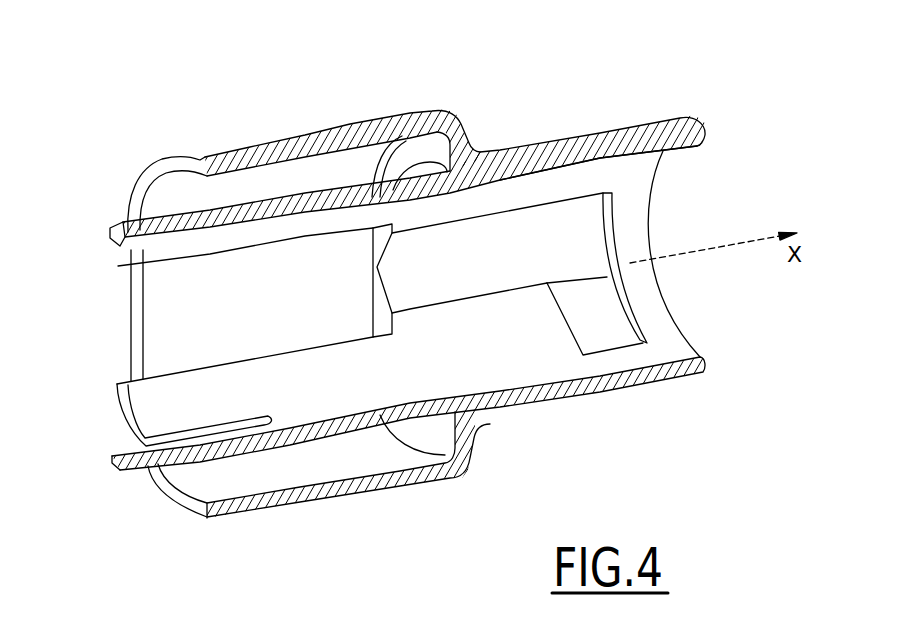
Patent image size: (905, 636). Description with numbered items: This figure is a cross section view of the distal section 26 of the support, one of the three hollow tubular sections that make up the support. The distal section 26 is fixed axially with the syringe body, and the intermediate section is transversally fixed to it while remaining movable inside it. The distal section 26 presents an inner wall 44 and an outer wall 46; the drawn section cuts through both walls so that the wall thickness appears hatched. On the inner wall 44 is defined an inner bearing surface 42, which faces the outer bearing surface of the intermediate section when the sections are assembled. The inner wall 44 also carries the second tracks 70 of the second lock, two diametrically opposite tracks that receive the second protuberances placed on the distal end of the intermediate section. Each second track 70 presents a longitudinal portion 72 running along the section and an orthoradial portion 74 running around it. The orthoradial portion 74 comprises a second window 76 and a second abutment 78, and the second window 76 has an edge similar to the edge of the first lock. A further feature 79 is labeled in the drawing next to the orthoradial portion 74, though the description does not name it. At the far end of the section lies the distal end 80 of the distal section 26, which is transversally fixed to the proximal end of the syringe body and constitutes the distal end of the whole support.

The distal section 26 is at (322, 97).
The outer wall 46 is at (610, 122).
The inner bearing surface 42 is at (630, 168).
The second abutment 78 is at (581, 212).
The window opening 79 is at (618, 303).
The orthoradial portion 74 is at (605, 325).
The second window 76 is at (608, 356).
The second track 70 is at (552, 260).
The longitudinal portion 72 is at (477, 282).
The inner wall 44 is at (328, 414).
The distal end 80 is at (167, 530).